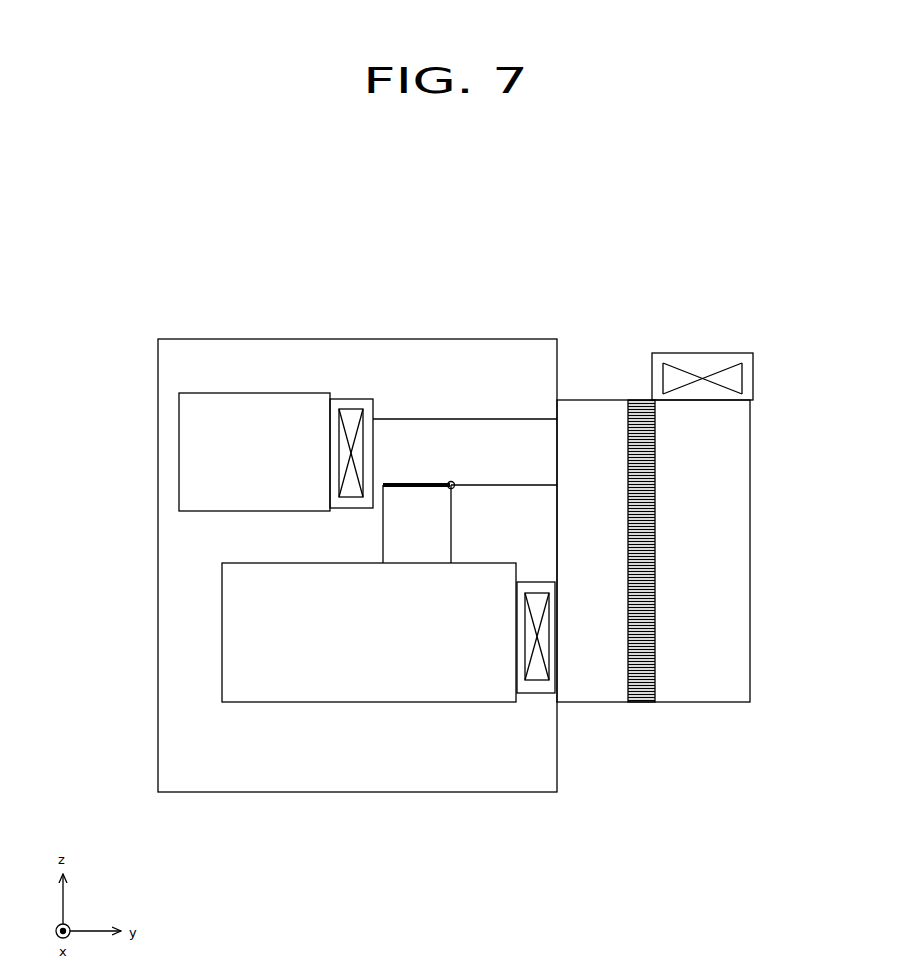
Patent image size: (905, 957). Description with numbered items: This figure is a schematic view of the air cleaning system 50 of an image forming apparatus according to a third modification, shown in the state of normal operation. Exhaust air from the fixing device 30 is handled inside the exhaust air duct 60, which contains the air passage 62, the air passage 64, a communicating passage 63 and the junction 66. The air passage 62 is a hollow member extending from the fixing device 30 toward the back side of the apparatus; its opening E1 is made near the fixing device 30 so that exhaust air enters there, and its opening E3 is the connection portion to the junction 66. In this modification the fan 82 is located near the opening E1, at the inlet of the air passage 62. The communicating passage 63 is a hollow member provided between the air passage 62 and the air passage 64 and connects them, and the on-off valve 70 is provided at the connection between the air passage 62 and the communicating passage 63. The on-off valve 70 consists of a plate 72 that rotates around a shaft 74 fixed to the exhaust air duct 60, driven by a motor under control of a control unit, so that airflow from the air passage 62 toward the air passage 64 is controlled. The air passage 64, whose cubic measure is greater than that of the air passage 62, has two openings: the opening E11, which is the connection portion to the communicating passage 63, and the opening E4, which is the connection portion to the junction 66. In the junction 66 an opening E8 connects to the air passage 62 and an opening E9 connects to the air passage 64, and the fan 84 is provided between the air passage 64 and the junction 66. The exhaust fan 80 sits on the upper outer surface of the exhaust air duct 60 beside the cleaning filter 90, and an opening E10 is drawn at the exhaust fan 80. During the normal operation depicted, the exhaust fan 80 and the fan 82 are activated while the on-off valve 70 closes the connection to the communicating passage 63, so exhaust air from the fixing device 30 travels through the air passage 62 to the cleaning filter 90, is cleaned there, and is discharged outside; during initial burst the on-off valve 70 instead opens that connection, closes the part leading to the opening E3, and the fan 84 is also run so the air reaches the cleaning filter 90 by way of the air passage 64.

The fixing device 30 is at (250, 403).
The air cleaning system 50 is at (661, 221).
The exhaust air duct 60 is at (455, 272).
The air passage 62 is at (491, 420).
The communicating passage 63 is at (393, 529).
The air passage 64 is at (313, 694).
The junction 66 is at (612, 413).
The on-off valve 70 is at (497, 527).
The plate 72 is at (405, 492).
The shaft 74 is at (455, 487).
The exhaust fan 80 is at (719, 361).
The fan 82 is at (353, 405).
The fan 84 is at (538, 686).
The cleaning filter 90 is at (635, 703).
The opening E1 is at (372, 439).
The opening E3 is at (557, 452).
The opening E4 is at (517, 652).
The opening E8 is at (560, 457).
The opening E9 is at (557, 637).
The opening E10 is at (702, 402).
The opening E11 is at (414, 563).